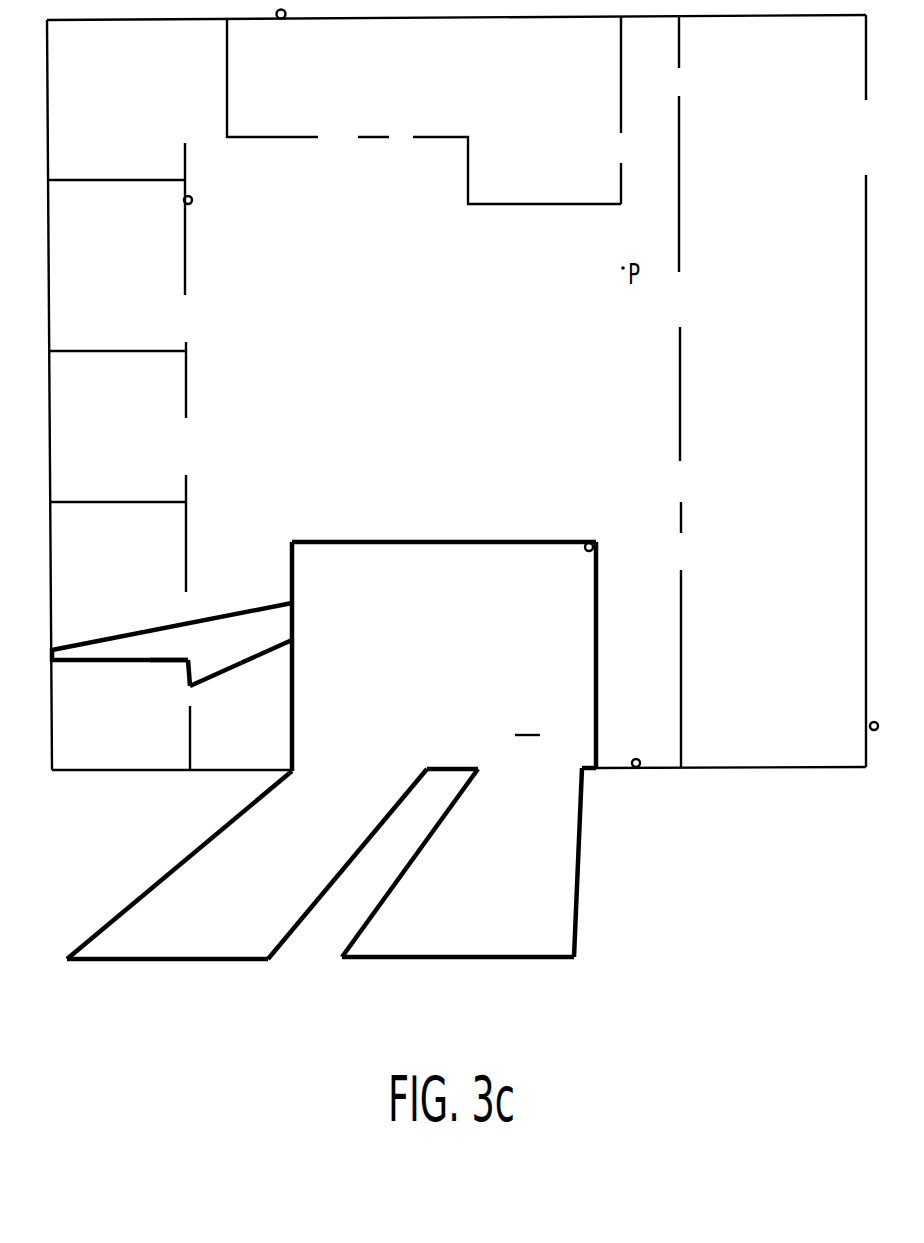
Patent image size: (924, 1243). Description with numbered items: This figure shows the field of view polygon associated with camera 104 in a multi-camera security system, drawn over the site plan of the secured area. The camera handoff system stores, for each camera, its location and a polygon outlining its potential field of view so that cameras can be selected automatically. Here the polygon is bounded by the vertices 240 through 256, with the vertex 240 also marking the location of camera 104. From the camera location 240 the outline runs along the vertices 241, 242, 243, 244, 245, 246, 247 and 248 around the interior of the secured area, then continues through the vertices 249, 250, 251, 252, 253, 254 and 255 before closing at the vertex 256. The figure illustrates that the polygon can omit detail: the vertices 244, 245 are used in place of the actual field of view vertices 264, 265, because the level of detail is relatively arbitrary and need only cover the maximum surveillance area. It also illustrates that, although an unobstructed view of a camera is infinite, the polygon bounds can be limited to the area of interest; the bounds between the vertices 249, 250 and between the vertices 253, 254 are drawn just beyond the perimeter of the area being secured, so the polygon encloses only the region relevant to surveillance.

The camera 104 is at (597, 548).
The camera location vertex 240 is at (593, 541).
The field of view polygon vertex 241 is at (292, 542).
The field of view polygon vertex 242 is at (294, 603).
The field of view polygon vertex 243 is at (57, 650).
The simplified polygon vertex 244 is at (198, 660).
The simplified polygon vertex 245 is at (193, 687).
The field of view polygon vertex 246 is at (294, 640).
The field of view polygon vertex 247 is at (290, 776).
The field of view polygon vertex 248 is at (300, 768).
The polygon bound vertex 249 is at (67, 957).
The polygon bound vertex 250 is at (268, 961).
The field of view polygon vertex 251 is at (427, 768).
The field of view polygon vertex 252 is at (479, 770).
The polygon bound vertex 253 is at (343, 959).
The polygon bound vertex 254 is at (576, 958).
The field of view polygon vertex 255 is at (587, 771).
The field of view polygon vertex 256 is at (601, 765).
The actual field of view vertex 264 is at (183, 664).
The actual field of view vertex 265 is at (186, 664).